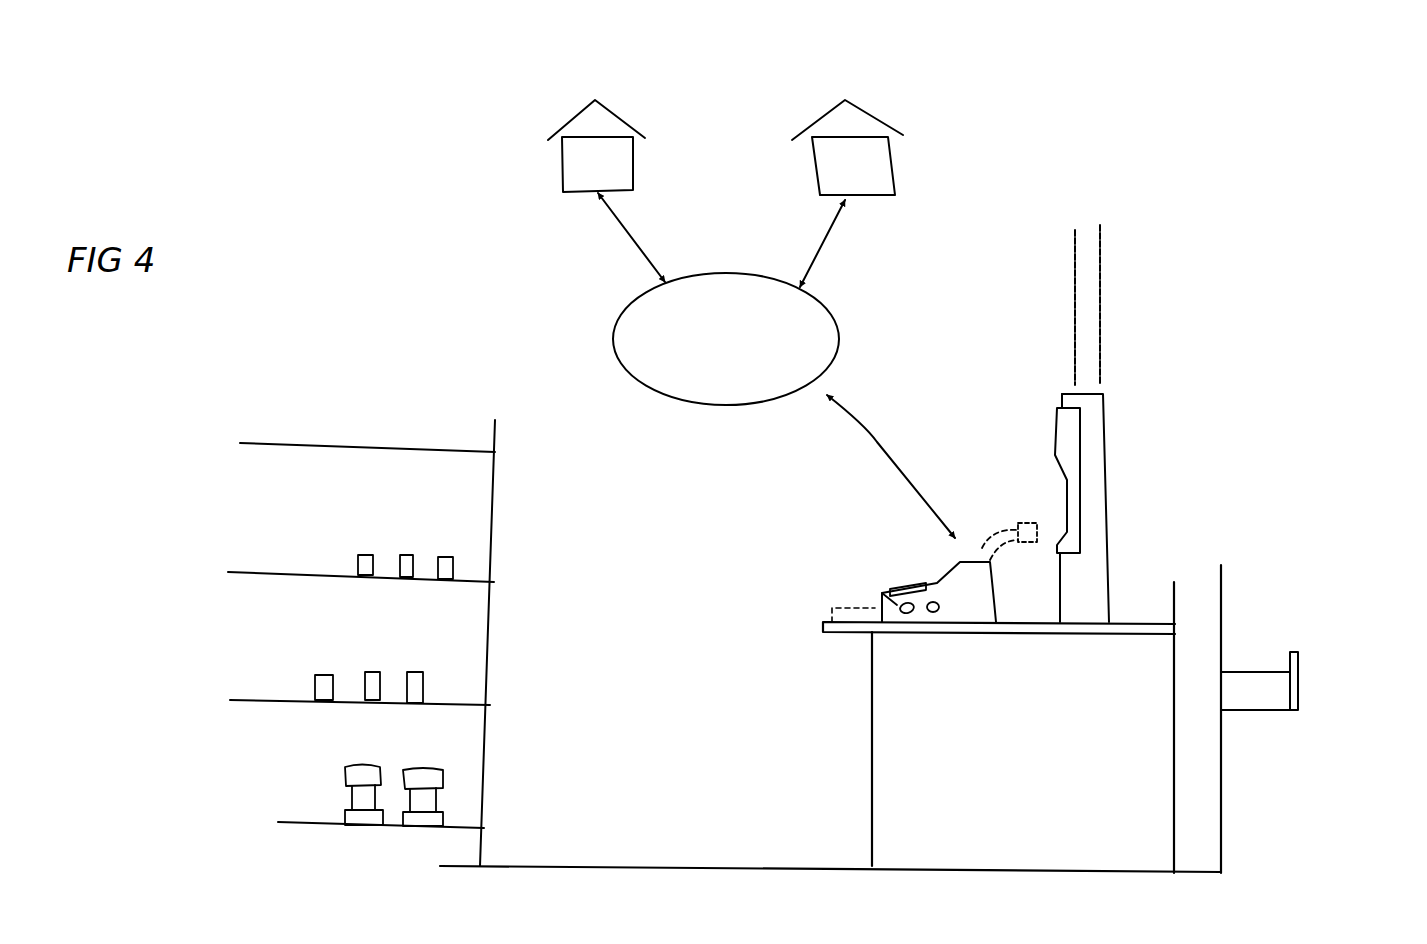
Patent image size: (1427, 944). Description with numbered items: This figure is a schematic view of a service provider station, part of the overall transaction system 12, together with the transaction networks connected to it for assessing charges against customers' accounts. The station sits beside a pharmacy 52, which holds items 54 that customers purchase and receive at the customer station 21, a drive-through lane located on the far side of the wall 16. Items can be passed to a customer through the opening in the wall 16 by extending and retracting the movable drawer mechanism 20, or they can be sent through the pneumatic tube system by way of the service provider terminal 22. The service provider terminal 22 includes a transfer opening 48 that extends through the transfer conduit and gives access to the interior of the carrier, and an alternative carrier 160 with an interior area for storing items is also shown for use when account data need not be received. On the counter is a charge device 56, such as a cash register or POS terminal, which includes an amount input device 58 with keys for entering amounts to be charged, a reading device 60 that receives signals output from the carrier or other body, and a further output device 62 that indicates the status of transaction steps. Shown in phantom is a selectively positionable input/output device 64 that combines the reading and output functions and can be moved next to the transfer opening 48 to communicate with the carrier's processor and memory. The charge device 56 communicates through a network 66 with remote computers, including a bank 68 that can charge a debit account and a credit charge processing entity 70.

The apparatus 12 is at (677, 601).
The wall 16 is at (1215, 822).
The movable drawer mechanism 20 is at (1265, 722).
The customer station 21 is at (1363, 842).
The service provider terminal 22 is at (1037, 443).
The transfer opening 48 is at (1048, 492).
The pharmacy 52 is at (530, 502).
The items 54 is at (372, 670).
The charge device 56 is at (828, 536).
The amount input device 58 is at (900, 587).
The reading device 60 is at (882, 593).
The output device 62 is at (937, 612).
The selectively positionable input/output device 64 is at (1008, 520).
The network 66 is at (822, 318).
The bank 68 is at (617, 102).
The credit charge processing entity 70 is at (878, 112).
The alternative carrier 160 is at (418, 768).